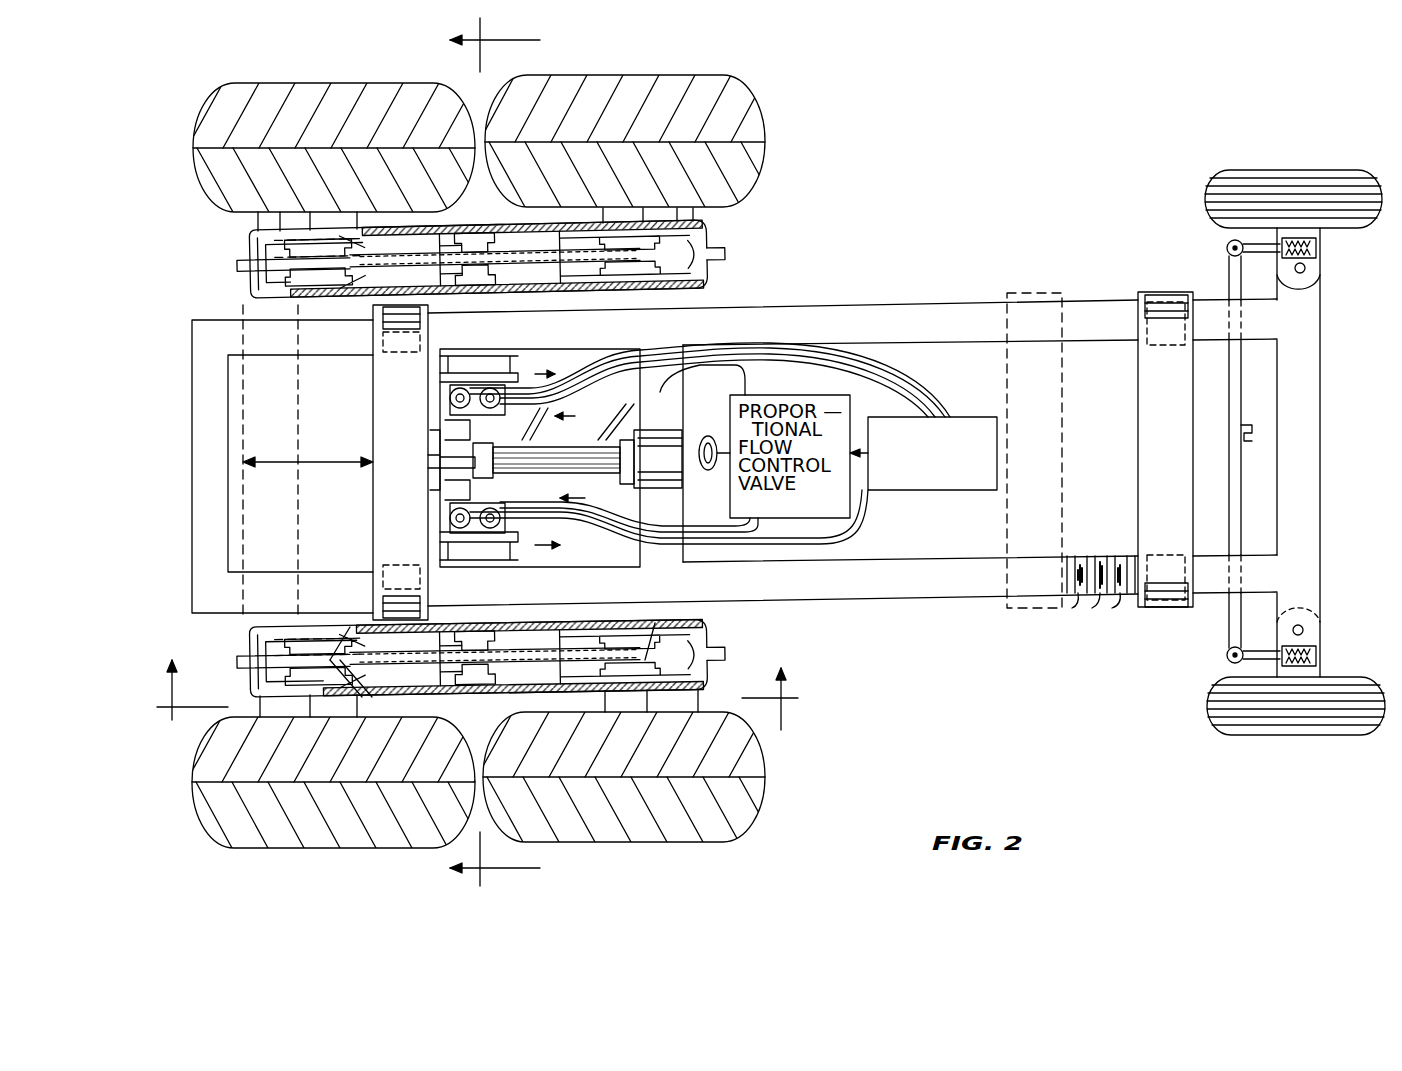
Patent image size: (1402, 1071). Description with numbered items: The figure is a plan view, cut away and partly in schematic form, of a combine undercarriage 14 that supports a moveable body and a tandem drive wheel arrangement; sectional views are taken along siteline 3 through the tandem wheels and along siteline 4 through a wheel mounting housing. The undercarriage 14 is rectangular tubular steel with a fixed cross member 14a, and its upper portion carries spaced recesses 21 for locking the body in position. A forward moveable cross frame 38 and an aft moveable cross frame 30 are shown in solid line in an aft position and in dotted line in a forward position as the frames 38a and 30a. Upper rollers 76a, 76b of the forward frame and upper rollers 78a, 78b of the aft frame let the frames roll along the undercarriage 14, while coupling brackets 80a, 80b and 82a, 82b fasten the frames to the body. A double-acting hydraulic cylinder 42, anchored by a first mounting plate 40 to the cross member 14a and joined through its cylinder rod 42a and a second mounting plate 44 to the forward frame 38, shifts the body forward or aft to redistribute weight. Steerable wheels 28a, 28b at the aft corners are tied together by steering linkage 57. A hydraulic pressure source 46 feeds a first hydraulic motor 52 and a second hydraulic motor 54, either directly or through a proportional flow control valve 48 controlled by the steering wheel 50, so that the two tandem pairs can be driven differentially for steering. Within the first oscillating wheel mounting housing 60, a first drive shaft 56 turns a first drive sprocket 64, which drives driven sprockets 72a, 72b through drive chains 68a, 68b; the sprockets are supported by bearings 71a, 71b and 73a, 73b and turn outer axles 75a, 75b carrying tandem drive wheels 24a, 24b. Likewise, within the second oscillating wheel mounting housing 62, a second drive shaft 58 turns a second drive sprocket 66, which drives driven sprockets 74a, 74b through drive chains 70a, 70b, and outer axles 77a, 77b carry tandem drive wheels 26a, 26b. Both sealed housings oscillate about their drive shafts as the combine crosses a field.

The siteline 3— 3 is at (480, 452).
The siteline 4— 4 is at (474, 695).
The undercarriage 14 is at (905, 303).
The fixed cross member 14a is at (677, 402).
The spaced recesses 21 is at (1080, 593).
The tandem drive wheel 24a is at (205, 790).
The tandem drive wheel 24b is at (765, 783).
The tandem drive wheel 26a is at (215, 205).
The tandem drive wheel 26b is at (765, 140).
The steerable wheel 28a is at (1228, 728).
The steerable wheel 28b is at (1225, 175).
The aft moveable cross frame 30 is at (1165, 449).
The aft moveable cross frame in forward position 30a is at (1030, 290).
The forward moveable cross frame 38 is at (373, 405).
The forward moveable cross frame in forward position 38a is at (243, 570).
The first mounting plate 40 is at (636, 482).
The hydraulic cylinder 42 is at (565, 472).
The cylinder rod 42a is at (455, 425).
The second mounting plate 44 is at (430, 493).
The hydraulic pressure source 46 is at (945, 417).
The proportional flow control valve 48 is at (850, 525).
The steering wheel 50 is at (708, 470).
The first hydraulic motor 52 is at (505, 496).
The second hydraulic motor 54 is at (445, 398).
The first drive shaft 56 is at (445, 643).
The steering linkage 57 is at (1230, 380).
The second drive shaft 58 is at (457, 283).
The first oscillating wheel mounting housing 60 is at (705, 625).
The second oscillating wheel mounting housing 62 is at (710, 290).
The first drive sprocket 64 is at (490, 645).
The second drive sprocket 66 is at (504, 276).
The drive chain 68a is at (475, 678).
The drive chain 68b is at (730, 660).
The drive chain 70a is at (445, 238).
The drive chain 70b is at (700, 242).
The bearing 71a is at (372, 625).
The bearing 71b is at (370, 690).
The driven sprocket 72a is at (375, 672).
The driven sprocket 72b is at (700, 648).
The bearing 73a is at (655, 625).
The bearing 73b is at (650, 690).
The driven sprocket 74a is at (377, 258).
The driven sprocket 74b is at (727, 262).
The outer axle 75a is at (324, 705).
The outer axle 75b is at (610, 706).
The upper roller 76a is at (375, 572).
The upper roller 76b is at (378, 355).
The outer axle 77a is at (324, 217).
The outer axle 77b is at (641, 220).
The upper roller 78a is at (1135, 555).
The upper roller 78b is at (1165, 345).
The coupling bracket 80a is at (440, 594).
The coupling bracket 80b is at (438, 325).
The coupling bracket 82a is at (1140, 600).
The coupling bracket 82b is at (1150, 305).